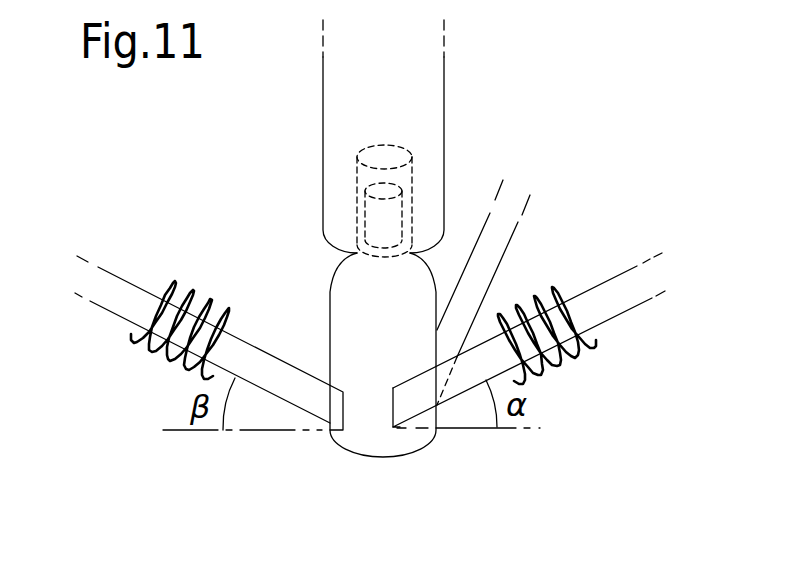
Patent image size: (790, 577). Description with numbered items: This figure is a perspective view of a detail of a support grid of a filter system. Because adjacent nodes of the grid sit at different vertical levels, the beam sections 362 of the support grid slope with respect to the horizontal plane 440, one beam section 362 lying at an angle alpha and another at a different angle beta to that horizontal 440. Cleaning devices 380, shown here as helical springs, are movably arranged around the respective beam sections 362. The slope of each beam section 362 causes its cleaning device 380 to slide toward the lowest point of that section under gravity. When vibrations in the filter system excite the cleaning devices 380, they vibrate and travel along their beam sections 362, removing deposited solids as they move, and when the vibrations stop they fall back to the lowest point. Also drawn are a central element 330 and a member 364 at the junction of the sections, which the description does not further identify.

The shaft 330 is at (442, 69).
The body / housing 364 is at (315, 285).
The beam section 362 is at (125, 305).
The cleaning device 380 is at (186, 275).
The horizontal plane 440 is at (508, 431).